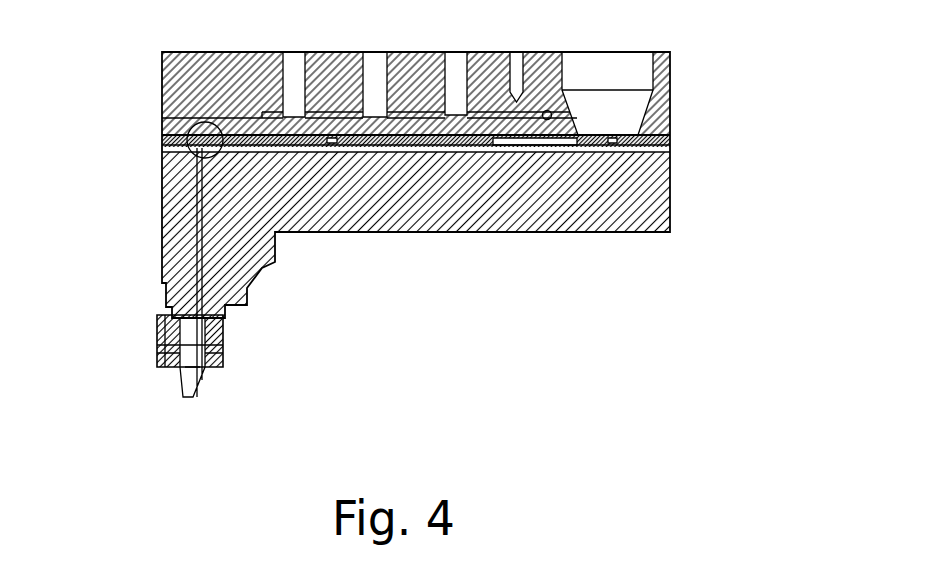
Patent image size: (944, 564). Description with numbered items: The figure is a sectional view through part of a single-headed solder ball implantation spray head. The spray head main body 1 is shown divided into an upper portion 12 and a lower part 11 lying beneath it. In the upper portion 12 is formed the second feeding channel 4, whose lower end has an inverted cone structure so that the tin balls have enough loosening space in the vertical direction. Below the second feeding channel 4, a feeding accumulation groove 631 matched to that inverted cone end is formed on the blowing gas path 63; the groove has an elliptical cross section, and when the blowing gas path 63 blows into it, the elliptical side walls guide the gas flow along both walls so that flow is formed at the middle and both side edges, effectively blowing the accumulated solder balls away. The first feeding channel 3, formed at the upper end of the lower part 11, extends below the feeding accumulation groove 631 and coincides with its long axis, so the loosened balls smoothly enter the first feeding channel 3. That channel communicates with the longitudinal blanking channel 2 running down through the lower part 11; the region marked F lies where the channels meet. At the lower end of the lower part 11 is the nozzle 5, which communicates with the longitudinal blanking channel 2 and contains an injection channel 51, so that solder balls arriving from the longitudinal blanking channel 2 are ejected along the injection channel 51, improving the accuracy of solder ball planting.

The spray head main body 1 is at (346, 173).
The upper portion 12 is at (162, 61).
The lower part 11 is at (163, 214).
The detail region F is at (162, 142).
The blowing gas path 63 is at (504, 137).
The feeding accumulation groove 631 is at (636, 135).
The second feeding channel 4 is at (595, 62).
The longitudinal blanking channel 2 is at (197, 250).
The first feeding channel 3 is at (428, 147).
The nozzle 5 is at (223, 356).
The injection channel 51 is at (220, 346).